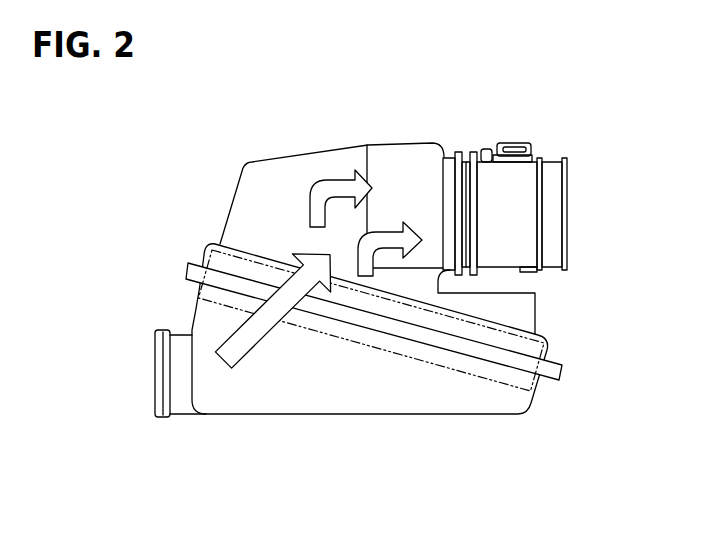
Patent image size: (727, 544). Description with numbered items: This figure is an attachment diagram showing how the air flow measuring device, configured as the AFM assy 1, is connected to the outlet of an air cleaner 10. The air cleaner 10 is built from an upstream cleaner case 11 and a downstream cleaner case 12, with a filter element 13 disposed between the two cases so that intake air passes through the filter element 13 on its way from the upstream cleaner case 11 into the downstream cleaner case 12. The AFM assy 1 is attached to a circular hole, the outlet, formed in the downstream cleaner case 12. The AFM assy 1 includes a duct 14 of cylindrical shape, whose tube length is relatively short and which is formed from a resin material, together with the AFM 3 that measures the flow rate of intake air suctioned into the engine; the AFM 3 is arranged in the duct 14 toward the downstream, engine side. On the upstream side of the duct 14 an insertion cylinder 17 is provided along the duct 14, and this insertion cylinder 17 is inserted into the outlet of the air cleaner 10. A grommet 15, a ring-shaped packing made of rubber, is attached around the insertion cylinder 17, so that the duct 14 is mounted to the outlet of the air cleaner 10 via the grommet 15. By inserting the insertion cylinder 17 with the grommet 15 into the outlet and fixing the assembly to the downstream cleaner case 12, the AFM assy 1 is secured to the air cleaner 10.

The AFM assy 1 is at (563, 136).
The AFM 3 is at (525, 142).
The air cleaner 10 is at (203, 218).
The upstream cleaner case 11 is at (303, 415).
The downstream cleaner case 12 is at (283, 156).
The filter element 13 is at (340, 343).
The duct 14 is at (501, 175).
The grommet 15 is at (457, 152).
The insertion cylinder 17 is at (444, 172).